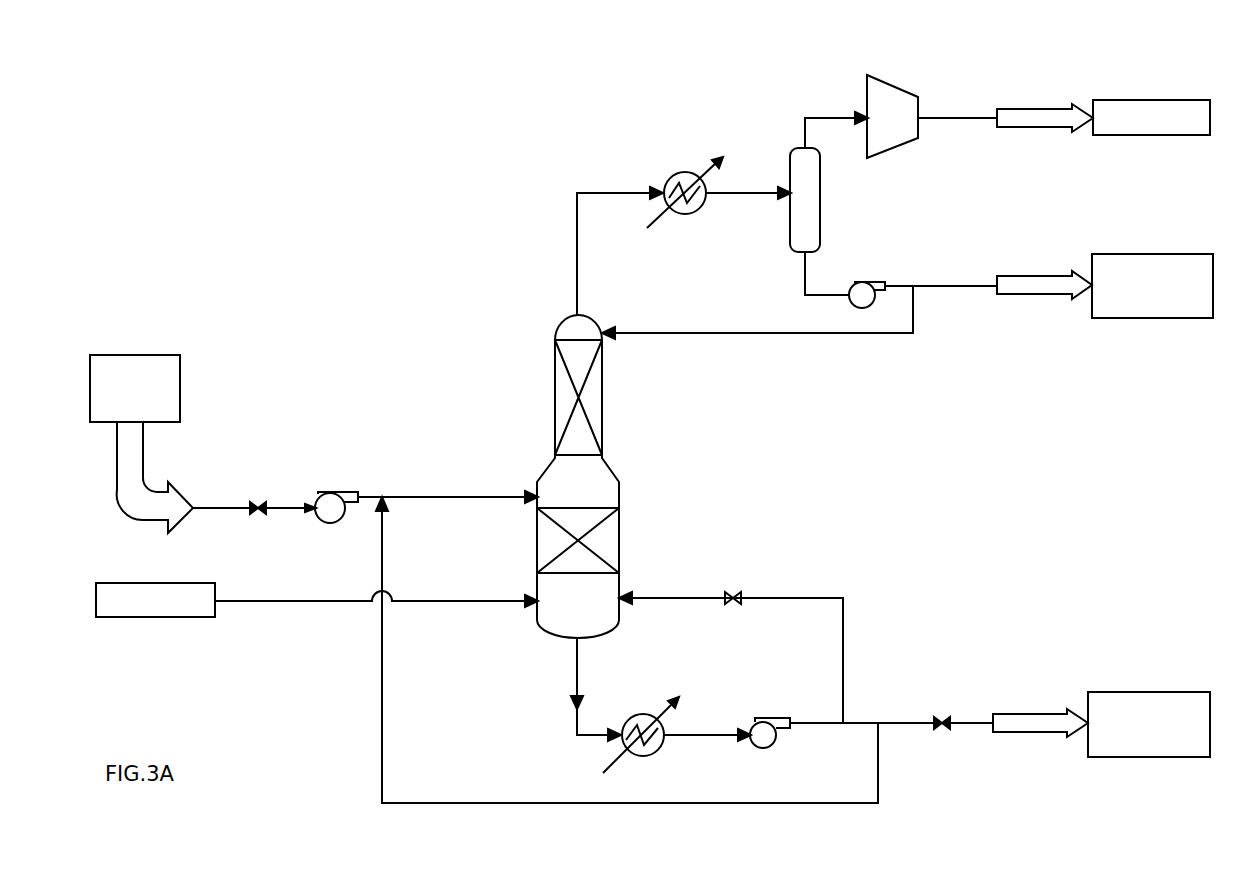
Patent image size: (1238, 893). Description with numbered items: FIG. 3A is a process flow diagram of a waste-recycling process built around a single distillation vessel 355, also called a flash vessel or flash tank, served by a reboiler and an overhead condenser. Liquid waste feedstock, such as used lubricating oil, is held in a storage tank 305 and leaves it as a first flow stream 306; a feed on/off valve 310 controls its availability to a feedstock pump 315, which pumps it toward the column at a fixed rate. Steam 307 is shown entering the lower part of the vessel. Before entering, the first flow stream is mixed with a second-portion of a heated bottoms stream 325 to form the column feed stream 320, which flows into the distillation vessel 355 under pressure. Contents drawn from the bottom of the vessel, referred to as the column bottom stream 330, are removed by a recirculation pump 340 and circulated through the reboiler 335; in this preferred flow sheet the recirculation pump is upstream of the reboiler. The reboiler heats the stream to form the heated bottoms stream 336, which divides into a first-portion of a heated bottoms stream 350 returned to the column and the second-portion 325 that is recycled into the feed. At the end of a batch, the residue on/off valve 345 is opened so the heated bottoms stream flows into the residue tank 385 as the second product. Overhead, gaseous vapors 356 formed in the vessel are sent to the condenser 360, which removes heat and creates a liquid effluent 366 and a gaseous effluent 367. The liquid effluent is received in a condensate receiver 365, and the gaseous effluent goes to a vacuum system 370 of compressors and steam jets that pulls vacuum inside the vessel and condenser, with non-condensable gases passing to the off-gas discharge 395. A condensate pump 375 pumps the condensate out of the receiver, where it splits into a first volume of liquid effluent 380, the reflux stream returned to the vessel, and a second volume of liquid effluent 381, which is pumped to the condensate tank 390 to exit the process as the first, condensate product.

The storage tank 305 is at (143, 355).
The first flow stream 306 is at (165, 515).
The steam source 307 is at (193, 617).
The feed on/off valve 310 is at (257, 504).
The feedstock pump 315 is at (320, 492).
The column feed stream 320 is at (447, 496).
The second-portion of a heated bottoms stream 325 is at (382, 700).
The column bottom stream 330 is at (575, 675).
The reboiler 335 is at (636, 716).
The heated bottoms stream 336 is at (700, 738).
The recirculation pump 340 is at (757, 720).
The residue on/off valve 345 is at (940, 721).
The first-portion of a heated bottoms stream 350 is at (805, 597).
The distillation vessel 355 is at (560, 318).
The gaseous vapors 356 is at (577, 218).
The condenser 360 is at (678, 172).
The condensate receiver 365 is at (798, 148).
The liquid effluent 366 is at (805, 272).
The gaseous effluent 367 is at (812, 117).
The vacuum system 370 is at (892, 85).
The condensate pump 375 is at (866, 283).
The first volume of liquid effluent 380 is at (718, 332).
The second volume of liquid effluent 381 is at (962, 285).
The residue tank 385 is at (1138, 692).
The condensate tank 390 is at (1113, 262).
The off-gas discharge 395 is at (1110, 110).